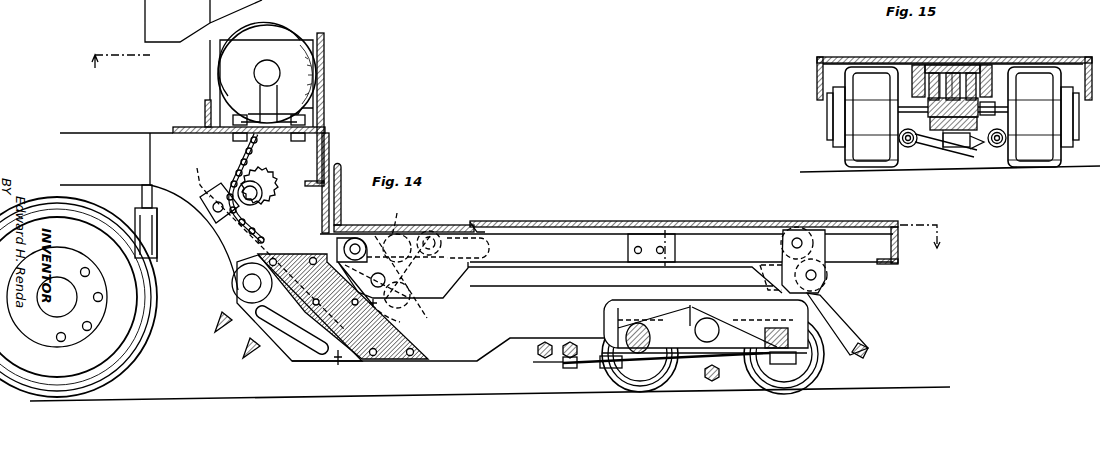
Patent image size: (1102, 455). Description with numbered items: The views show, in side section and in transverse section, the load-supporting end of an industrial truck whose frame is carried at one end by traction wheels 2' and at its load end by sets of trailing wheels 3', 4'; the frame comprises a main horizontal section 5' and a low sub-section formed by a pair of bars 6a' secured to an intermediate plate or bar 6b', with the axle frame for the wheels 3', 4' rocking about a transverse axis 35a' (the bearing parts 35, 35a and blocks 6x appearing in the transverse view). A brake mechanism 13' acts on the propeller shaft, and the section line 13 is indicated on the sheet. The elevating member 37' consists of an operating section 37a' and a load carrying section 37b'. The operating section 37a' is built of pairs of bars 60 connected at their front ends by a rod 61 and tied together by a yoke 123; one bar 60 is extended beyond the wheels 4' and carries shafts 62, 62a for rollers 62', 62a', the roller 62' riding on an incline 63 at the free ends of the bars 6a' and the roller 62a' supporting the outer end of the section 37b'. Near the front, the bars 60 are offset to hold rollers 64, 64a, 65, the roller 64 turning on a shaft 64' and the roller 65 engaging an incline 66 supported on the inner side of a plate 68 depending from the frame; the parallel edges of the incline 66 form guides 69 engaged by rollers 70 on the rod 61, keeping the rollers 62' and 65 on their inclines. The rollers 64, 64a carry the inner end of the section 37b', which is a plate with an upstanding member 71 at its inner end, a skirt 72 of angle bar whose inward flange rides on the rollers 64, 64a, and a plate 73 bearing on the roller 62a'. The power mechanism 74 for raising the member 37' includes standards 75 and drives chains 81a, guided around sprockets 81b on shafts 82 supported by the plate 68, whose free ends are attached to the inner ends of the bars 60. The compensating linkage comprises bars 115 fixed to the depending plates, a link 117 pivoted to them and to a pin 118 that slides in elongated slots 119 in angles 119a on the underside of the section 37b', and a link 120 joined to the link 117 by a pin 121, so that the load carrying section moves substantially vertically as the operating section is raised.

In FIG. 14, the traction wheels 2' is at (78, 297).
In FIG. 14, the trailing wheels 3' is at (703, 363).
In FIG. 15, the trailing wheels 3' is at (953, 129).
In FIG. 14, the trailing wheels 4' is at (686, 345).
In FIG. 14, the main horizontal section 5' is at (161, 145).
In FIG. 14, the bars 6a' is at (873, 343).
In FIG. 15, the bars 6a' is at (964, 64).
In FIG. 15, the intermediate plate or bar 6b' is at (961, 88).
In FIG. 15, the bearing block 6x is at (1012, 50).
In FIG. 14, the section line 13 is at (515, 134).
In FIG. 14, the brake mechanism 13' is at (160, 223).
In FIG. 14, the bolster 35 is at (690, 312).
In FIG. 15, the lever 35a is at (952, 149).
In FIG. 14, the transverse axis 35a' is at (735, 318).
In FIG. 14, the elevating member 37' is at (606, 248).
In FIG. 14, the operating section 37a' is at (639, 205).
In FIG. 15, the operating section 37a' is at (954, 48).
In FIG. 14, the load carrying section 37b' is at (684, 210).
In FIG. 14, the bars 60 is at (570, 270).
In FIG. 15, the bars 60 is at (927, 102).
In FIG. 14, the rod 61 is at (243, 283).
In FIG. 14, the shaft 62 is at (827, 275).
In FIG. 14, the roller 62' is at (779, 275).
In FIG. 14, the shaft 62a is at (825, 260).
In FIG. 14, the roller 62a' is at (781, 212).
In FIG. 14, the incline 63 is at (846, 328).
In FIG. 14, the roller 64 is at (357, 234).
In FIG. 14, the shaft 64' is at (394, 13).
In FIG. 14, the roller 64a is at (440, 131).
In FIG. 14, the roller 65 is at (391, 217).
In FIG. 14, the incline 66 is at (422, 358).
In FIG. 14, the plates 68 is at (339, 8).
In FIG. 14, the guides 69 is at (338, 364).
In FIG. 14, the rollers 70 is at (240, 291).
In FIG. 14, the upstanding member 71 is at (341, 168).
In FIG. 14, the skirt 72 is at (490, 230).
In FIG. 15, the skirt 72 is at (817, 92).
In FIG. 14, the plate 73 is at (862, 221).
In FIG. 14, the power mechanism 74 is at (249, 81).
In FIG. 14, the standards 75 is at (303, 112).
In FIG. 14, the chains 81a is at (255, 154).
In FIG. 14, the sprockets 81b is at (262, 178).
In FIG. 14, the shafts 82 is at (272, 195).
In FIG. 14, the bars 115 is at (218, 193).
In FIG. 14, the link 117 is at (395, 316).
In FIG. 14, the shaft or pin 118 is at (452, 237).
In FIG. 14, the slots 119 is at (468, 270).
In FIG. 14, the angles 119a is at (487, 236).
In FIG. 14, the link 120 is at (445, 295).
In FIG. 14, the pin 121 is at (408, 303).
In FIG. 14, the yoke 123 is at (676, 235).
In FIG. 15, the yoke 123 is at (880, 58).